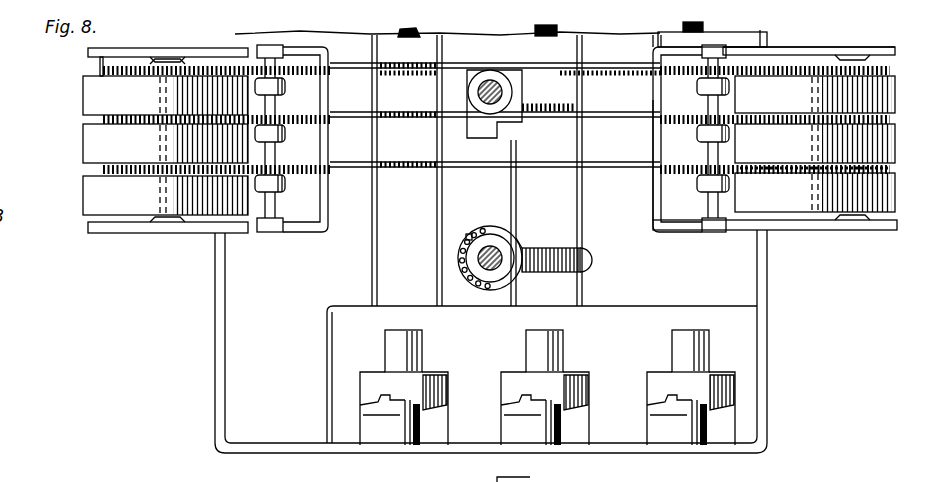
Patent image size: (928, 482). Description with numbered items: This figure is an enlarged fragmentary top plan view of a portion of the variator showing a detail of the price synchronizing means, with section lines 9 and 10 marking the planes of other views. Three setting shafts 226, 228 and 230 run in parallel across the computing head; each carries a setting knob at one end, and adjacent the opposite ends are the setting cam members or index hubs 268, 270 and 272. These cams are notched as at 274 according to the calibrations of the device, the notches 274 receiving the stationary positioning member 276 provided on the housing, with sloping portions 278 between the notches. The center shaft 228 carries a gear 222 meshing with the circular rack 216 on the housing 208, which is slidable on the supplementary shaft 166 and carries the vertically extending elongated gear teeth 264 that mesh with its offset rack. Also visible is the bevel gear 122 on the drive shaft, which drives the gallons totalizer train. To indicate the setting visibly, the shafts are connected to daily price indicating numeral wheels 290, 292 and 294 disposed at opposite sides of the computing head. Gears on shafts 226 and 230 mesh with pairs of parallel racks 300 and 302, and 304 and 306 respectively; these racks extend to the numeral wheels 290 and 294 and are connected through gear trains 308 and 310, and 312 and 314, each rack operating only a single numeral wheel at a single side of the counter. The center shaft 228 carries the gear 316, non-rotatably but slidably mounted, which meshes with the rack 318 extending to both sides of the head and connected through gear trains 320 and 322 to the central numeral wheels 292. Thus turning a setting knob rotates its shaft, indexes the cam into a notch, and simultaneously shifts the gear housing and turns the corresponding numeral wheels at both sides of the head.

The section line 9- 9 is at (86, 177).
The section line 10- 10 is at (463, 430).
The bevel gear 122 is at (507, 90).
The supplementary shaft 166 is at (490, 246).
The housing 208 is at (476, 255).
The circular rack 216 is at (520, 245).
The gear 222 is at (592, 260).
The setting shaft 226 is at (700, 28).
The setting shaft 228 is at (540, 30).
The setting shaft 230 is at (400, 30).
The elongated gear teeth 264 is at (466, 265).
The setting cam member 268 is at (715, 372).
The setting cam member 270 is at (553, 395).
The setting cam member 272 is at (412, 395).
The notches 274 is at (432, 380).
The stationary positioning member 276 is at (407, 443).
The sloping portions 278 is at (422, 432).
The numeral wheels 290 is at (88, 211).
The numeral wheels 292 is at (85, 136).
The numeral wheels 294 is at (85, 91).
The rack 300 is at (607, 62).
The rack 302 is at (623, 70).
The rack 304 is at (630, 172).
The rack 306 is at (612, 160).
The gear train 308 is at (725, 62).
The gear train 310 is at (840, 66).
The gear train 312 is at (682, 172).
The gear train 314 is at (789, 172).
The gear 316 is at (498, 135).
The rack 318 is at (616, 112).
The gear train 320 is at (290, 112).
The gear train 322 is at (165, 108).